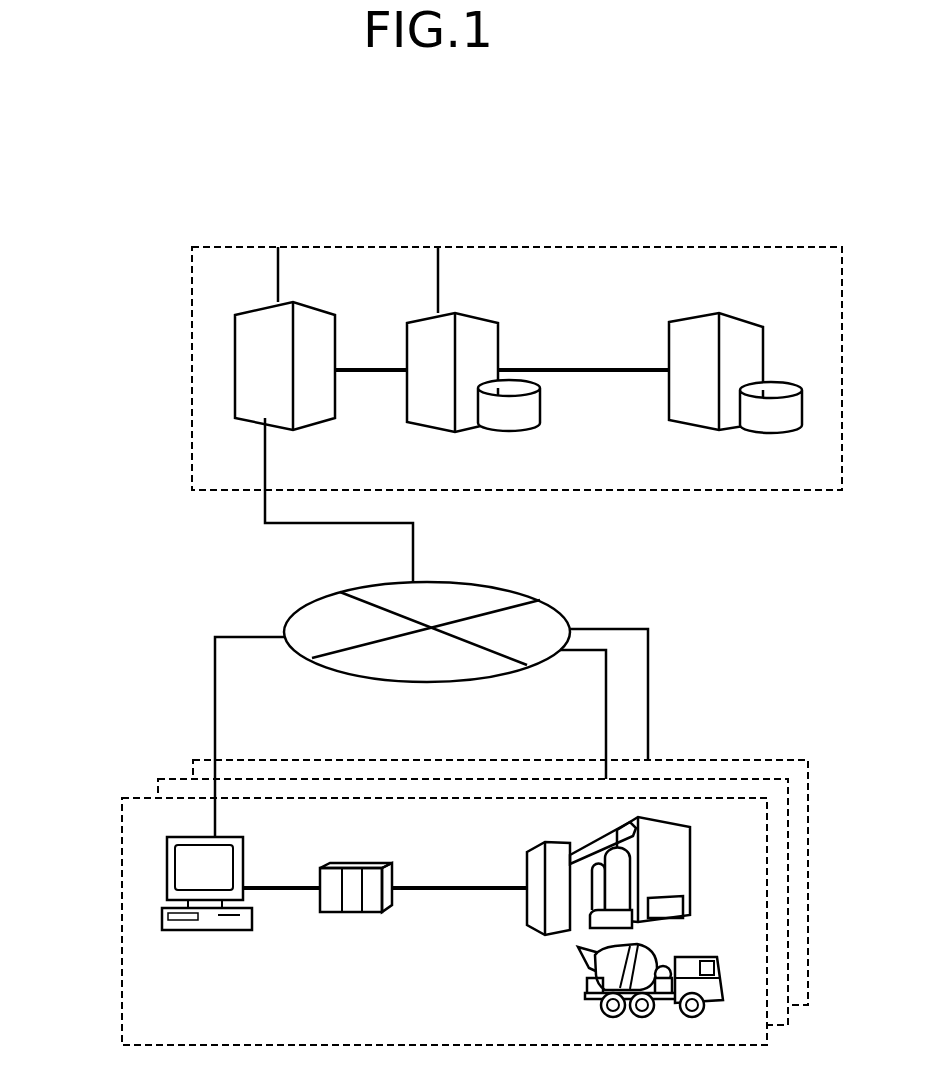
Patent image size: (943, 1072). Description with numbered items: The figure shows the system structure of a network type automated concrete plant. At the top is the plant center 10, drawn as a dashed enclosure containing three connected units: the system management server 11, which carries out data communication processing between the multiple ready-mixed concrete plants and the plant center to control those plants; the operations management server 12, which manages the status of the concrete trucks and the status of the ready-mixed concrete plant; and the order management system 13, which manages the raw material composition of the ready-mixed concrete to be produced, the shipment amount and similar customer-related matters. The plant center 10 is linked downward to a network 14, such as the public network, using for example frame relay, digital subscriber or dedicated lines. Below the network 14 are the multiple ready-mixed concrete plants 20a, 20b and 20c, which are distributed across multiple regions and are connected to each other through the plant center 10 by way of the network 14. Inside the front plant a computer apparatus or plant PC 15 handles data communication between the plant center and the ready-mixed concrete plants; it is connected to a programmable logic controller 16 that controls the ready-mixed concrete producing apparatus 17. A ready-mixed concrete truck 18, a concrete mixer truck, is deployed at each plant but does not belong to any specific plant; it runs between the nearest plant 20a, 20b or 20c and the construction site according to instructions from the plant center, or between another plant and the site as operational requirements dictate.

The plant center 10 is at (718, 247).
The system management server 11 is at (318, 313).
The operations management server 12 is at (470, 318).
The order management system 13 is at (740, 322).
The network 14 is at (487, 585).
The computer apparatus (plant PC) 15 is at (245, 864).
The programmable logic controller 16 is at (363, 866).
The ready-mixed concrete producing apparatus 17 is at (690, 856).
The ready-mixed concrete truck 18 is at (584, 969).
The ready-mixed concrete plant 20a is at (122, 802).
The ready-mixed concrete plant 20b is at (452, 778).
The ready-mixed concrete plant 20c is at (718, 760).